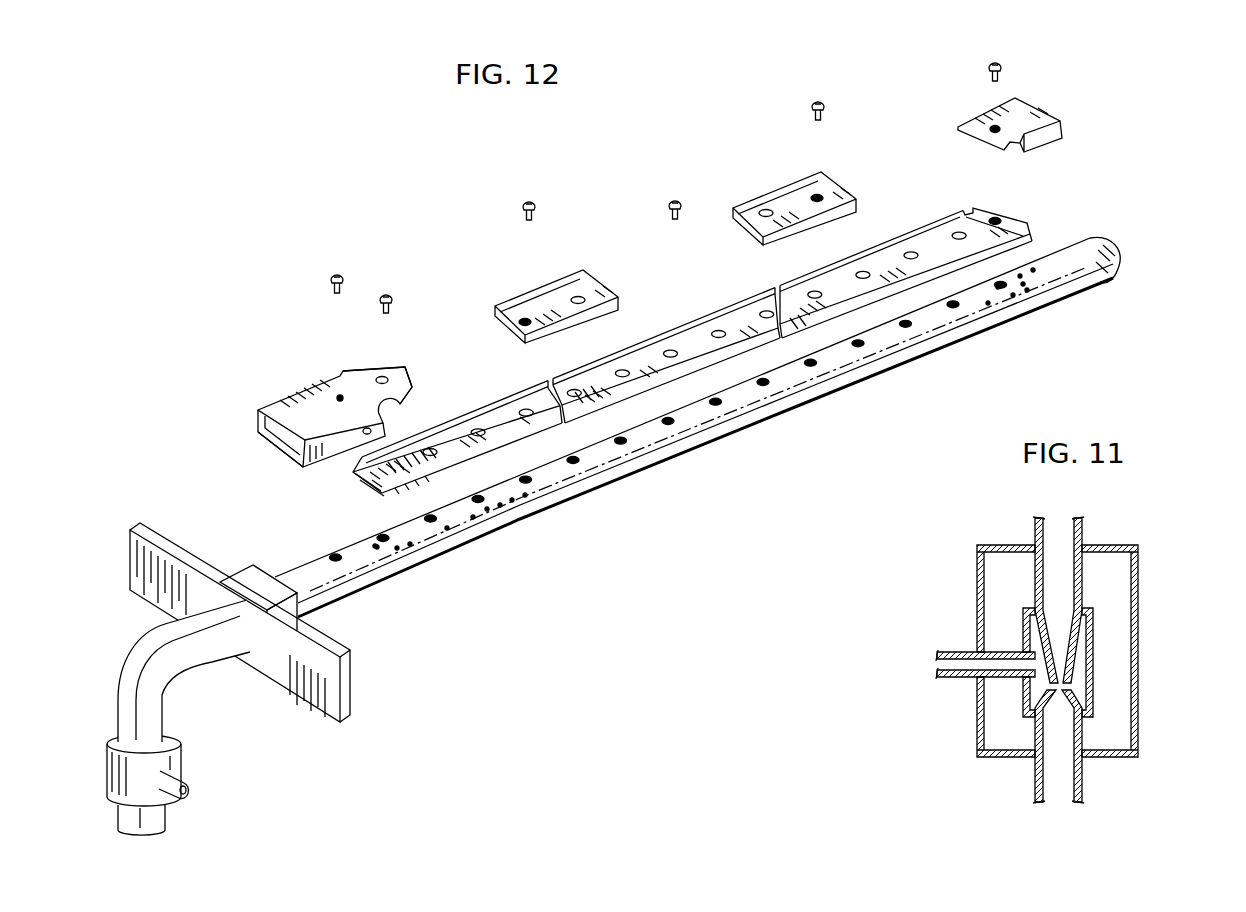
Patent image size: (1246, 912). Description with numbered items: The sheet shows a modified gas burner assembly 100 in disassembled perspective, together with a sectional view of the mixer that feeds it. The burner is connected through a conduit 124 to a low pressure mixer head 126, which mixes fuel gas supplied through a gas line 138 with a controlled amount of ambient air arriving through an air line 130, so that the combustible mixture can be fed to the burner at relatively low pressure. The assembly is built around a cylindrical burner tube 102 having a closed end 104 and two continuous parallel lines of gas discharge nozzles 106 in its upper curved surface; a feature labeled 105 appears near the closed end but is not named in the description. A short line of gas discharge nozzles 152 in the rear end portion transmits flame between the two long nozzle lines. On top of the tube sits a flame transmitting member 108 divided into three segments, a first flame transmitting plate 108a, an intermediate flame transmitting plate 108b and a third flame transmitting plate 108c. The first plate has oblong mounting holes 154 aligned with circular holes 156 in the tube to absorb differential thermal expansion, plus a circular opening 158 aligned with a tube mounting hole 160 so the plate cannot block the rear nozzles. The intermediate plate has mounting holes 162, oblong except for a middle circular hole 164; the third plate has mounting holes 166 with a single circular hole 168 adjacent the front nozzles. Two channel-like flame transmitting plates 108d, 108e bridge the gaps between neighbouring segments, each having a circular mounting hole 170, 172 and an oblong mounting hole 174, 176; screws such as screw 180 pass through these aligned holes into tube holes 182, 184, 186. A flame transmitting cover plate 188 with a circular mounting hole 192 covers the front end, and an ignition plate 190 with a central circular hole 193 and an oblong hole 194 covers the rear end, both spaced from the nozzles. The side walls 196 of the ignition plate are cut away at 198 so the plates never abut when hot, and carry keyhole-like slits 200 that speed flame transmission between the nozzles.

In FIG. 12, the gas burner assembly 100 is at (738, 470).
In FIG. 12, the burner tube 102 is at (890, 358).
In FIG. 12, the closed end 104 is at (1114, 259).
In FIG. 12, the end opening 105 is at (1024, 282).
In FIG. 12, the gas discharge nozzles 106 is at (462, 524).
In FIG. 12, the flame transmitting member 108 is at (490, 362).
In FIG. 12, the first flame transmitting plate 108a is at (484, 413).
In FIG. 12, the second or intermediate flame transmitting plate 108b is at (683, 332).
In FIG. 12, the third flame transmitting plate 108c is at (938, 228).
In FIG. 12, the channel-like flame transmitting plate 108d is at (553, 287).
In FIG. 12, the channel-like flame transmitting plate 108e is at (778, 186).
In FIG. 11, the conduit 124 is at (1085, 532).
In FIG. 11, the mixer head 126 is at (1206, 625).
In FIG. 11, the air line 130 is at (1085, 781).
In FIG. 11, the gas line 138 is at (960, 650).
In FIG. 12, the gas discharge nozzles 152 is at (373, 545).
In FIG. 12, the mounting holes 154 is at (440, 410).
In FIG. 12, the holes 156 is at (479, 502).
In FIG. 12, the circular opening 158 is at (388, 473).
In FIG. 12, the mounting hole 160 is at (384, 542).
In FIG. 12, the mounting holes 162 is at (600, 353).
In FIG. 12, the middle circular hole 164 is at (668, 350).
In FIG. 12, the mounting holes 166 is at (848, 248).
In FIG. 12, the circular hole 168 is at (996, 219).
In FIG. 12, the circular mounting hole 170 is at (523, 320).
In FIG. 12, the circular mounting hole 172 is at (819, 196).
In FIG. 12, the oblong mounting hole 174 is at (583, 299).
In FIG. 12, the oblong mounting hole 176 is at (764, 211).
In FIG. 12, the screw 180 is at (538, 206).
In FIG. 12, the hole 182 is at (575, 463).
In FIG. 12, the hole 184 is at (765, 385).
In FIG. 12, the hole 186 is at (813, 365).
In FIG. 12, the flame transmitting cover plate 188 is at (1025, 112).
In FIG. 12, the ignition plate 190 is at (313, 388).
In FIG. 12, the circular mounting hole 192 is at (993, 128).
In FIG. 12, the circular hole 193 is at (338, 398).
In FIG. 12, the oblong hole 194 is at (381, 377).
In FIG. 12, the side walls 196 is at (303, 456).
In FIG. 12, the cut-away portions 198 is at (410, 386).
In FIG. 12, the keyhole-like slits 200 is at (365, 435).